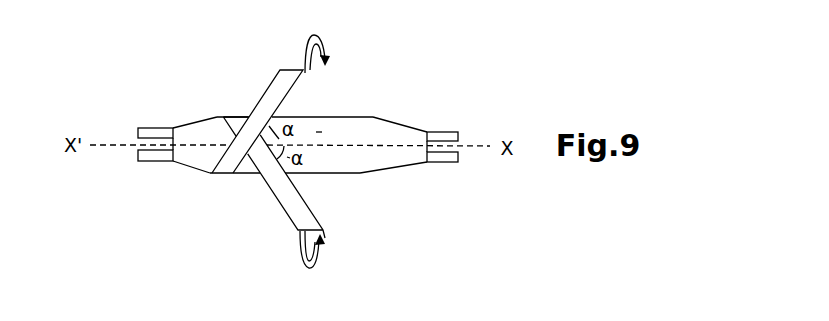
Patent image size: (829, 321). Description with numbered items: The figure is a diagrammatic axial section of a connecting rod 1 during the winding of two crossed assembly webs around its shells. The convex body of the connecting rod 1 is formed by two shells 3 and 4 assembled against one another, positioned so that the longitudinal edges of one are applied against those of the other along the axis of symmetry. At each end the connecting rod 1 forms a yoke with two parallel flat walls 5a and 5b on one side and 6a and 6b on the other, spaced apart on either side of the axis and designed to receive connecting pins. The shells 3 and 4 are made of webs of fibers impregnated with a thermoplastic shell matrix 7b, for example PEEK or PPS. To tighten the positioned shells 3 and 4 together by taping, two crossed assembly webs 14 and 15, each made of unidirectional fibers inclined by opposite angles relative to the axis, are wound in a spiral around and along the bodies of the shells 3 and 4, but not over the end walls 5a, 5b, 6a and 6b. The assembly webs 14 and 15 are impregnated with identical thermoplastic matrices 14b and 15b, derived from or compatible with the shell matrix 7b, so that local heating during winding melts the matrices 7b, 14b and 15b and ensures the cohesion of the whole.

The connecting rod 1 is at (431, 95).
The shell 3 is at (372, 117).
The shell 4 is at (358, 175).
The flat wall 5a is at (157, 128).
The flat wall 5b is at (157, 162).
The flat wall 6a is at (450, 132).
The flat wall 6b is at (440, 163).
The thermoplastic shell matrix 7b is at (319, 132).
The assembly web 14 is at (252, 101).
The thermoplastic matrix 14b is at (273, 83).
The assembly web 15 is at (268, 196).
The thermoplastic matrix 15b is at (288, 207).